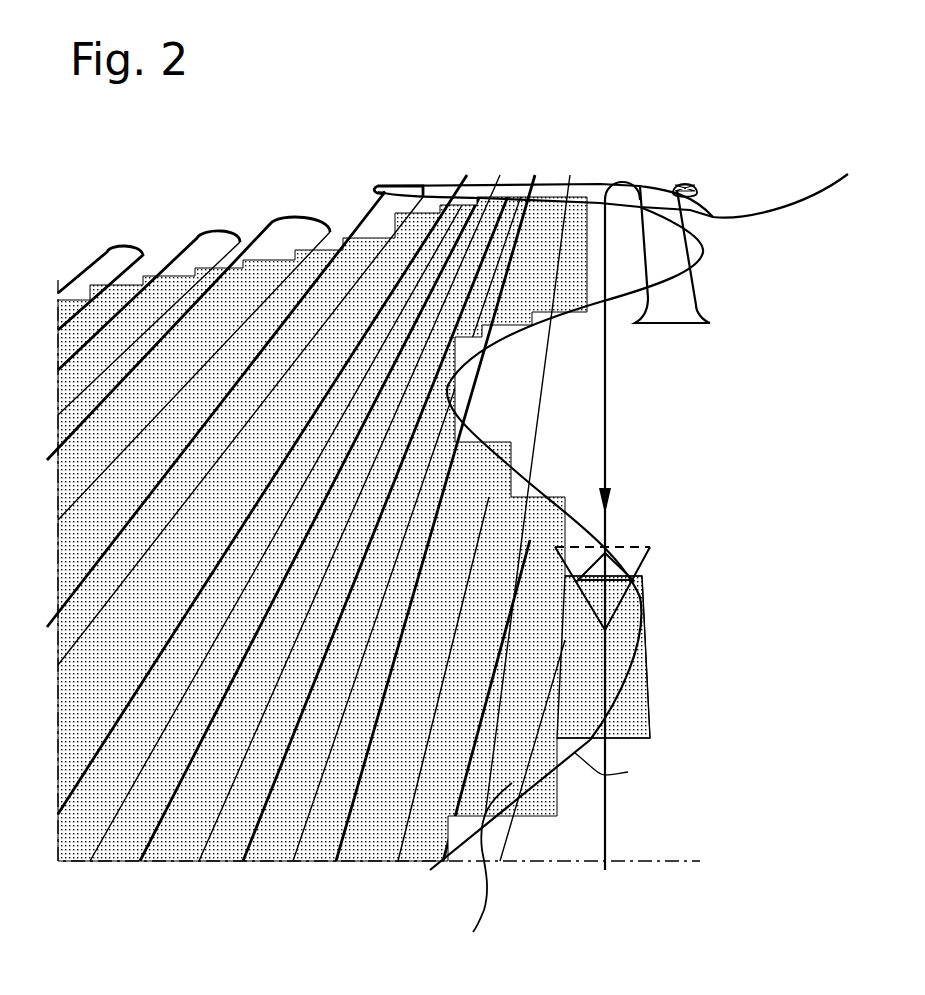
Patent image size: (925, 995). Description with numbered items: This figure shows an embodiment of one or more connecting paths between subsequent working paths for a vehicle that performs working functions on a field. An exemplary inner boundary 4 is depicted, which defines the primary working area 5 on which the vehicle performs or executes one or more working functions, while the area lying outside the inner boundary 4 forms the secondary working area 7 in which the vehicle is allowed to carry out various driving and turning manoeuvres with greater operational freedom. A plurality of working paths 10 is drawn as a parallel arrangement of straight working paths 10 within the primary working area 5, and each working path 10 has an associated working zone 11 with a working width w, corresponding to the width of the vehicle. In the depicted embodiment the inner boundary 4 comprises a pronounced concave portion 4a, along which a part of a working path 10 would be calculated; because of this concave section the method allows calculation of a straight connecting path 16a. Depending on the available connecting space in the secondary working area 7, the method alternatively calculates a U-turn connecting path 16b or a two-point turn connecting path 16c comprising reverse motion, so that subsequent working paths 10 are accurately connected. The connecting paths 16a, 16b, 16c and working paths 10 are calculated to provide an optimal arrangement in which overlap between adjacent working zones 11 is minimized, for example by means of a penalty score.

The inner boundary 4 is at (575, 753).
The pronounced concave portion 4a is at (470, 383).
The primary working area 5 is at (505, 667).
The secondary working area 7 is at (575, 395).
The working path 10 is at (484, 872).
The working zone 11 is at (640, 712).
The straight connecting path 16a is at (612, 457).
The U-turn connecting path 16b is at (316, 232).
The two-point turn connecting path 16c is at (710, 323).